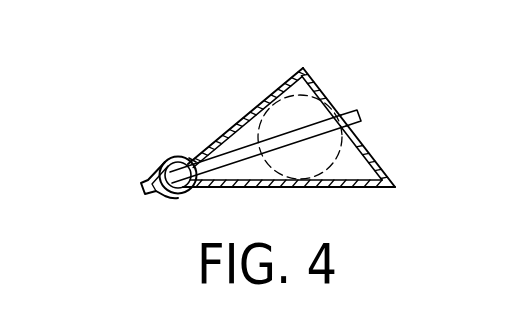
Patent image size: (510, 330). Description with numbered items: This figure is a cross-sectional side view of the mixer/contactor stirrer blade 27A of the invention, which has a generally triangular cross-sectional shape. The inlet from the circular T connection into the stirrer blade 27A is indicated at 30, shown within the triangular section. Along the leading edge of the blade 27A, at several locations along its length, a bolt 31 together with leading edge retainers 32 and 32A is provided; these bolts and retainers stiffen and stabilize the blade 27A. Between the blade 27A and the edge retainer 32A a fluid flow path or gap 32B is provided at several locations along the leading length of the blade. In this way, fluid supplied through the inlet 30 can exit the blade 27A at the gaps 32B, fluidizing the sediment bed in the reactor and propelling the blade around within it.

The circular T connection inlet 30 is at (324, 180).
The stirrer blade 27A is at (243, 113).
The bolt 31 is at (224, 163).
The leading edge retainer 32 is at (150, 177).
The edge retainer 32A is at (180, 157).
The fluid flow path or gap 32B is at (189, 158).